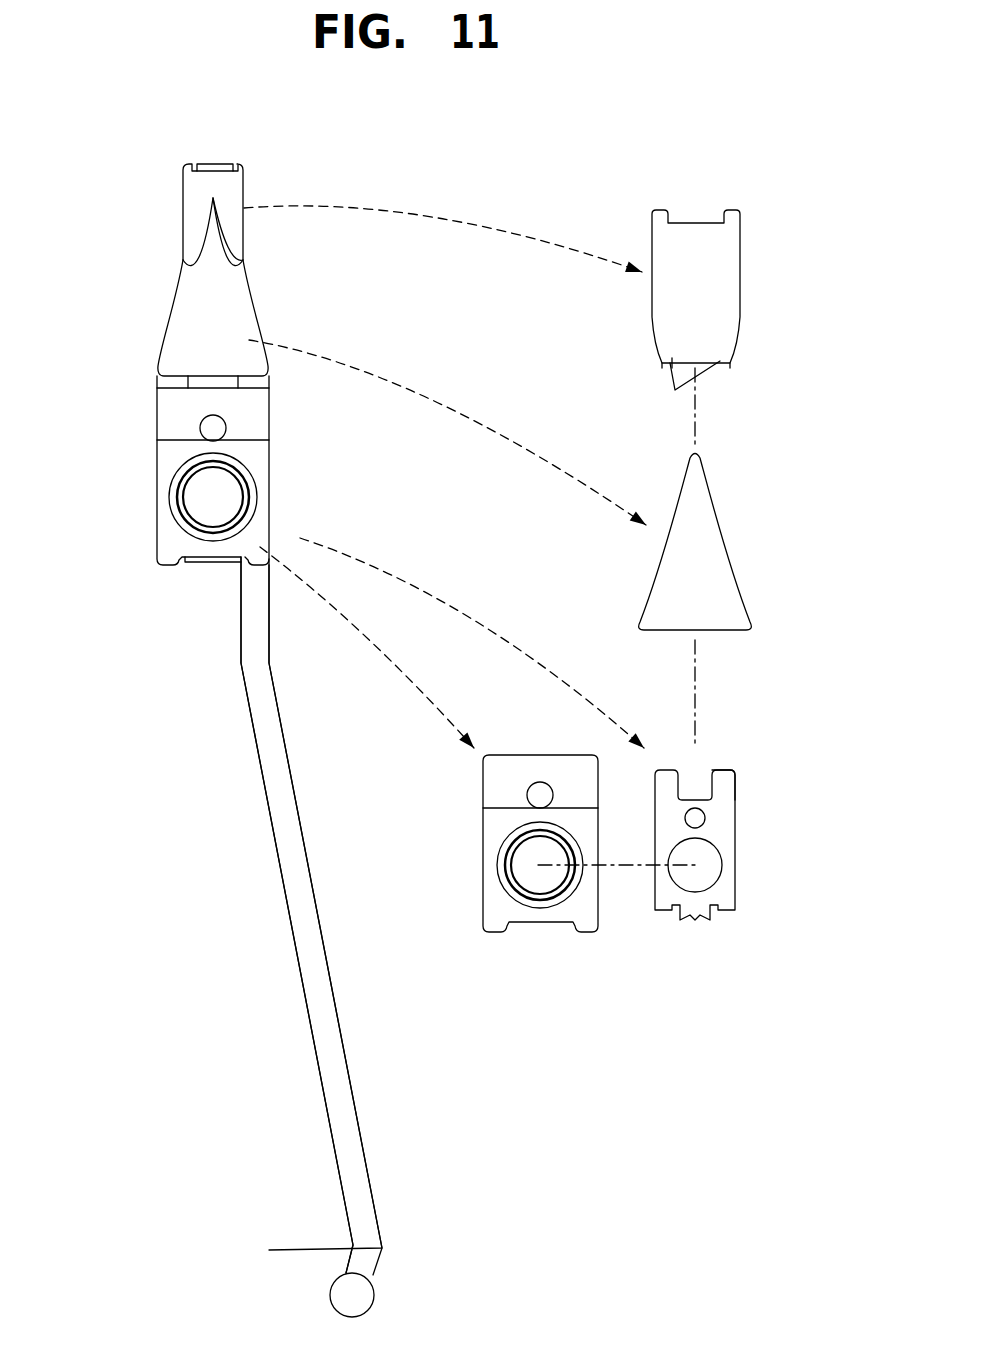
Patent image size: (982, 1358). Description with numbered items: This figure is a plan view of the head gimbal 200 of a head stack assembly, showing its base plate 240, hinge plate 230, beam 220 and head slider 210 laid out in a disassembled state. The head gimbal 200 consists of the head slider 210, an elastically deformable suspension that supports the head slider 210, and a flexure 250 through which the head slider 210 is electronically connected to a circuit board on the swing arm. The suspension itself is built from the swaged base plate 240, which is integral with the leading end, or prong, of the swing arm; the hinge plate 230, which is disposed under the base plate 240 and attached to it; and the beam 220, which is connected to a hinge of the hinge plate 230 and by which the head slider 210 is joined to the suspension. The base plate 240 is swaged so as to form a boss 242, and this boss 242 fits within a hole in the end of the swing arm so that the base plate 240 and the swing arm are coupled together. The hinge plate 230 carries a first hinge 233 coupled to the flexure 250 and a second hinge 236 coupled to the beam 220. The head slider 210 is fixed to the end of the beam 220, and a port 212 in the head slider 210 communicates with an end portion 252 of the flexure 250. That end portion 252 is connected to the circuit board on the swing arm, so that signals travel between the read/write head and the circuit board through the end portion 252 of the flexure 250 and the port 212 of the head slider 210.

The head gimbal 200 is at (160, 240).
The head slider 210 is at (750, 265).
The port 212 is at (685, 391).
The beam 220 is at (748, 523).
The hinge plate 230 is at (745, 814).
The first hinge 233 is at (730, 895).
The second hinge 236 is at (728, 773).
The base plate 240 is at (560, 899).
The boss 242 is at (530, 905).
The flexure 250 is at (285, 837).
The end portion 252 is at (337, 1293).